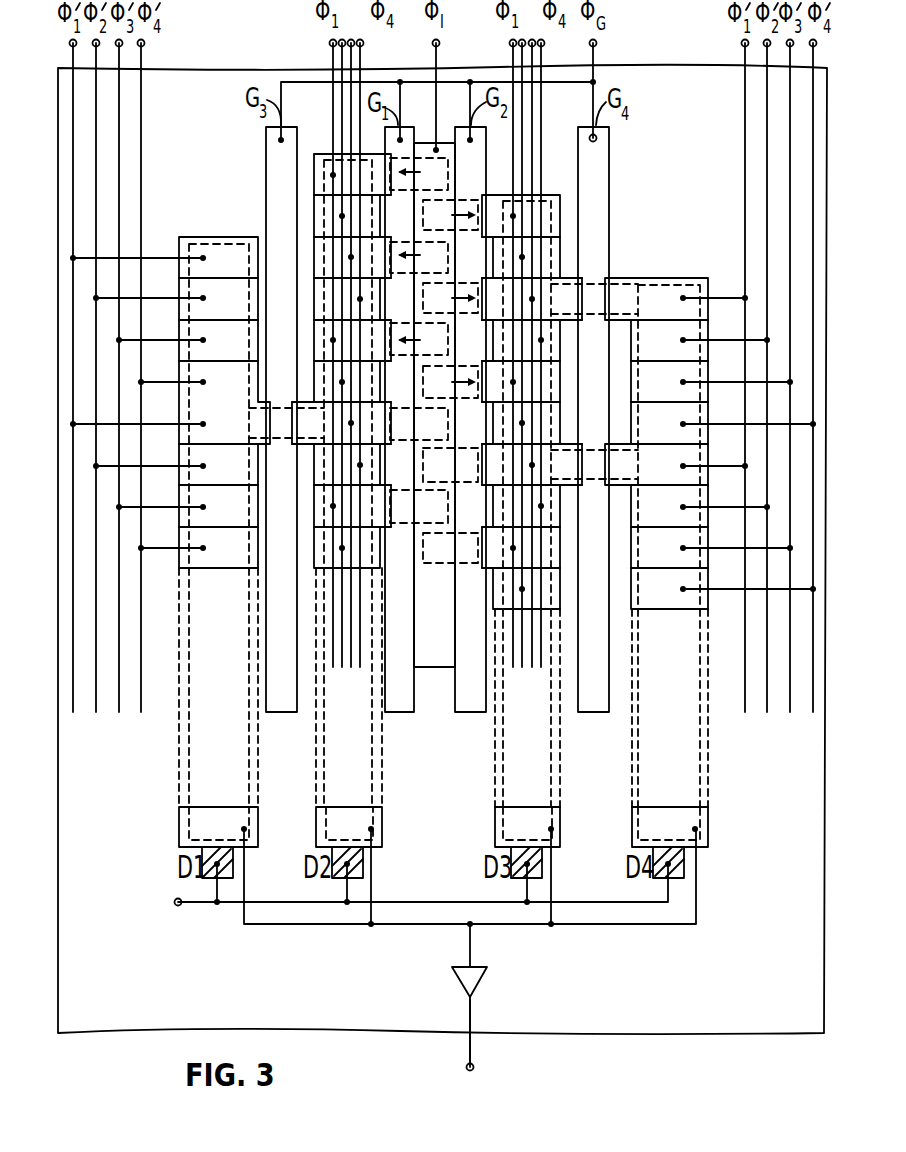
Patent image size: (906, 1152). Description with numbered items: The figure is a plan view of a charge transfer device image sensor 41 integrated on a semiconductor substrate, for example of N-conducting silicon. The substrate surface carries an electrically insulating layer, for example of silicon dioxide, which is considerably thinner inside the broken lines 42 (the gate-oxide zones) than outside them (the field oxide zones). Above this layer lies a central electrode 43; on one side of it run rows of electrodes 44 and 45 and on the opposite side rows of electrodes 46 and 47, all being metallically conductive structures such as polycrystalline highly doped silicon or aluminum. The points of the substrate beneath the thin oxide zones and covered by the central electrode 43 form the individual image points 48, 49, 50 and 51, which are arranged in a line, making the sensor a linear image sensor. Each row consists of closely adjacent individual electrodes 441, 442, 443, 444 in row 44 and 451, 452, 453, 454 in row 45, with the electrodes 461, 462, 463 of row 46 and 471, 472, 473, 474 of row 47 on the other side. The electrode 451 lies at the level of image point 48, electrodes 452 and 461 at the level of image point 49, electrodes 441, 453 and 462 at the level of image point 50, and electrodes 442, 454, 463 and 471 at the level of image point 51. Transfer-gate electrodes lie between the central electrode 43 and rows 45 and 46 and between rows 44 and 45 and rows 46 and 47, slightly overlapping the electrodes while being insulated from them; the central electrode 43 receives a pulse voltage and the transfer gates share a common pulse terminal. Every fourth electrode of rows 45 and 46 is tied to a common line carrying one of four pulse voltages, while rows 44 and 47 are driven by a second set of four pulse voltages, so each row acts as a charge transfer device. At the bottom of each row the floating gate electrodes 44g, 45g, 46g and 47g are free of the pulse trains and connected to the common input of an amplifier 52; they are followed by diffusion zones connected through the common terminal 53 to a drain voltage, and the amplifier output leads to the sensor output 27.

The CTD image sensor 41 is at (735, 1035).
The broken lines 42 is at (283, 443).
The central electrode 43 is at (438, 421).
The row of electrodes 44 is at (170, 523).
The row of electrodes 45 is at (303, 468).
The row of electrodes 46 is at (573, 468).
The row of electrodes 47 is at (710, 536).
The image point 48 is at (434, 163).
The image point 49 is at (436, 210).
The image point 50 is at (437, 255).
The image point 51 is at (435, 298).
The amplifier 52 is at (481, 985).
The common terminal 53 is at (176, 900).
The output terminal 27 is at (477, 1067).
The individual electrode 441 is at (213, 247).
The individual electrode 442 is at (192, 289).
The individual electrode 443 is at (192, 331).
The individual electrode 444 is at (192, 373).
The individual electrode 451 is at (322, 155).
The individual electrode 452 is at (318, 207).
The individual electrode 453 is at (316, 247).
The individual electrode 454 is at (316, 298).
The individual electrode 461 is at (550, 200).
The individual electrode 462 is at (558, 247).
The individual electrode 463 is at (566, 290).
The individual electrode 471 is at (637, 278).
The individual electrode 472 is at (667, 298).
The individual electrode 473 is at (688, 375).
The individual electrode 474 is at (688, 413).
The floating gate electrode 44g is at (200, 815).
The floating gate electrode 45g is at (330, 815).
The floating gate electrode 46g is at (510, 815).
The floating gate electrode 47g is at (660, 815).